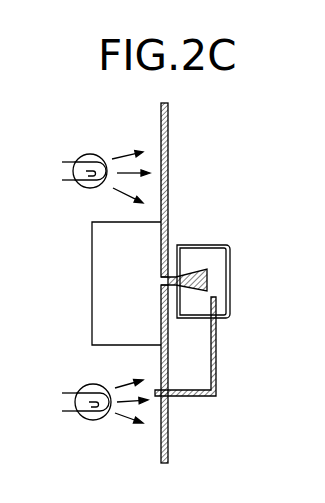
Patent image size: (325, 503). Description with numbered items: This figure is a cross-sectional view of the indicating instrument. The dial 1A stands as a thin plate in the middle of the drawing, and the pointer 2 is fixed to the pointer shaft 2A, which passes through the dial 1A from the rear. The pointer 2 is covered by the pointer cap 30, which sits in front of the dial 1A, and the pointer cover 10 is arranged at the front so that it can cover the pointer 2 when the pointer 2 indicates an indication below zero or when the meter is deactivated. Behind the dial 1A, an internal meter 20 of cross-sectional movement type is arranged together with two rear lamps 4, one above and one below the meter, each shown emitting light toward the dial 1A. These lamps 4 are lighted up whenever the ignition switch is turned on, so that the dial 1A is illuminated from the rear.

The dial 1A is at (168, 128).
The pointer 2 is at (207, 280).
The pointer shaft 2A is at (173, 247).
The rear lamps 4 is at (95, 153).
The pointer cover 10 is at (216, 365).
The internal meter 20 is at (101, 277).
The pointer cap 30 is at (226, 247).